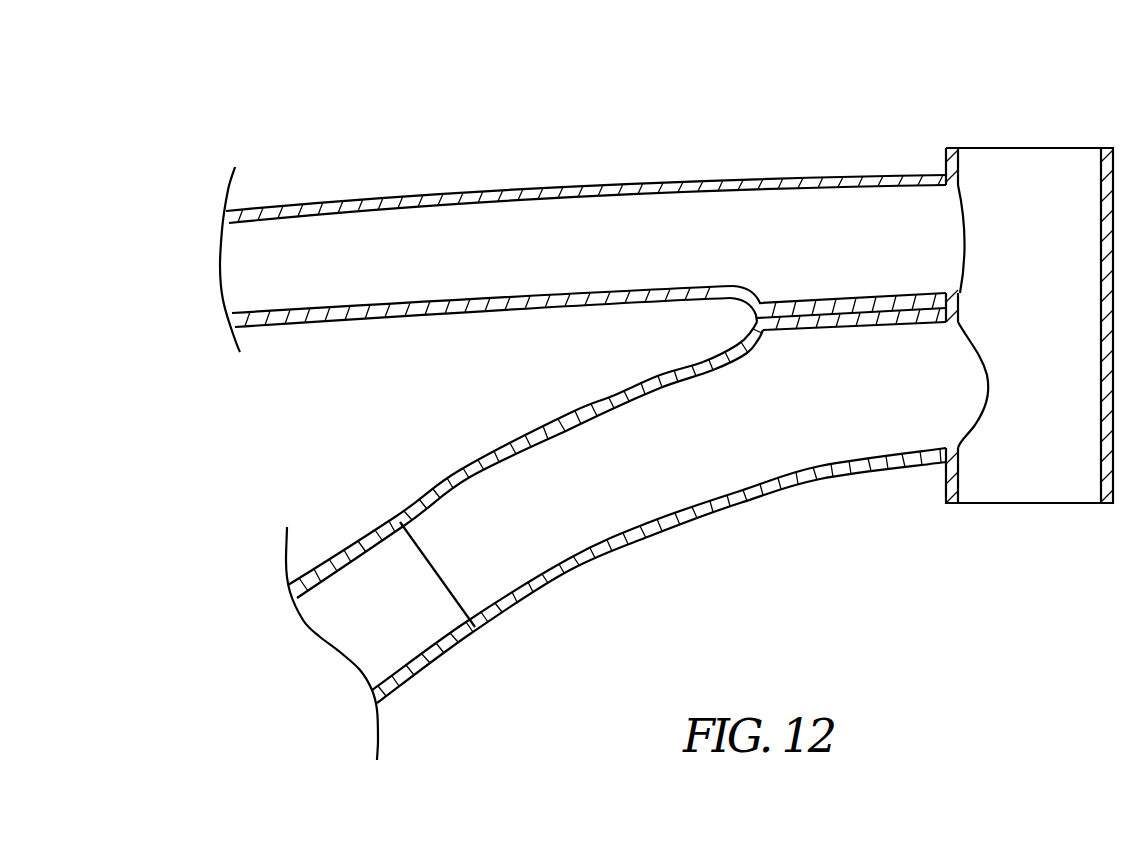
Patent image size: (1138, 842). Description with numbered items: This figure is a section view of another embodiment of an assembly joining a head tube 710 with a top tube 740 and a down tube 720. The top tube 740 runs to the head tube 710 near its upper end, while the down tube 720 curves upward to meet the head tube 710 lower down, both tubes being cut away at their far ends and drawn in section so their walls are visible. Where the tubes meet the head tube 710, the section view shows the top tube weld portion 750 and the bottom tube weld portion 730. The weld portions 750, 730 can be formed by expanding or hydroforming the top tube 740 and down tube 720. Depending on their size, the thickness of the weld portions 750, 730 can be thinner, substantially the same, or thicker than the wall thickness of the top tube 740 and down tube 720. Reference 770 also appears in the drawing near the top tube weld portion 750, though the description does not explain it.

The head tube 710 is at (1043, 178).
The down tube 720 is at (652, 482).
The bottom tube weld portion 730 is at (752, 340).
The top tube 740 is at (533, 225).
The top tube weld portion 750 is at (825, 305).
The inner conduit liner 770 is at (845, 318).